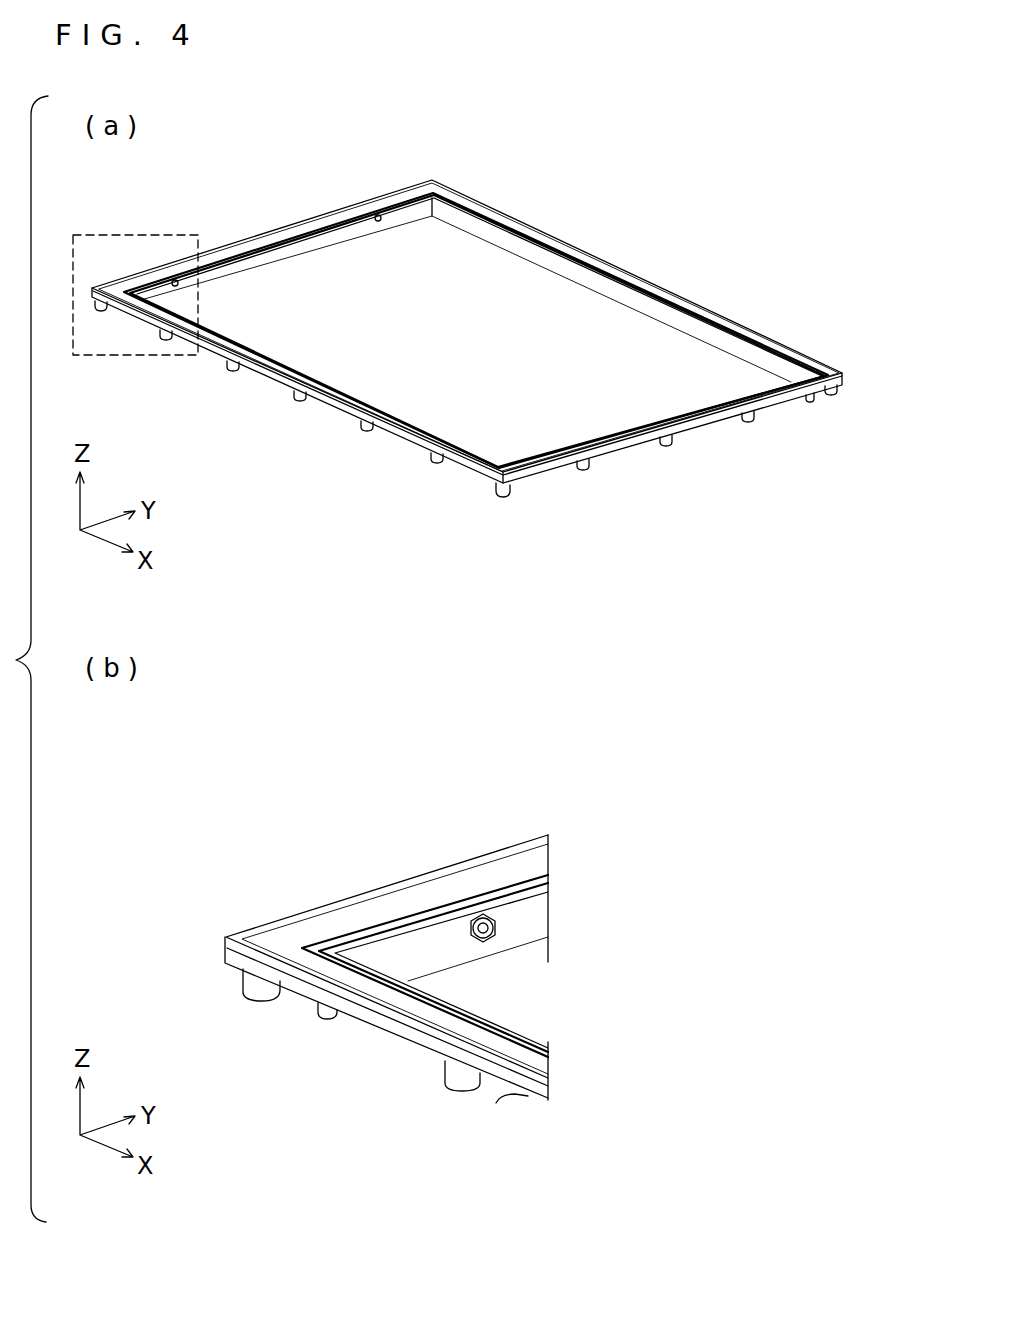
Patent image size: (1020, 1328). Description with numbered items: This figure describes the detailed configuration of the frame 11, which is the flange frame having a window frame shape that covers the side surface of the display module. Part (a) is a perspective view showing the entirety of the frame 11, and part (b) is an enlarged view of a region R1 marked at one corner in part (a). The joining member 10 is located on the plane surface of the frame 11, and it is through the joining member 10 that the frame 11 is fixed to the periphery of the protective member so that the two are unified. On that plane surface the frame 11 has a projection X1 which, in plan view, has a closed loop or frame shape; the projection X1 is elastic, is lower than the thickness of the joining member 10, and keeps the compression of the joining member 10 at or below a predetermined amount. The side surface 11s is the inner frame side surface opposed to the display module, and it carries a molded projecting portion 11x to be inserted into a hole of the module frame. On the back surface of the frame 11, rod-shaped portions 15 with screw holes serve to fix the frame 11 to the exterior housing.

The frame 11 is at (753, 204).
The joining member 10 is at (104, 291).
The projection X1 is at (122, 292).
The side surface 11s is at (162, 303).
The projecting portion 11x is at (377, 221).
The rod-shaped portion 15 is at (165, 338).
The region R1 is at (198, 235).